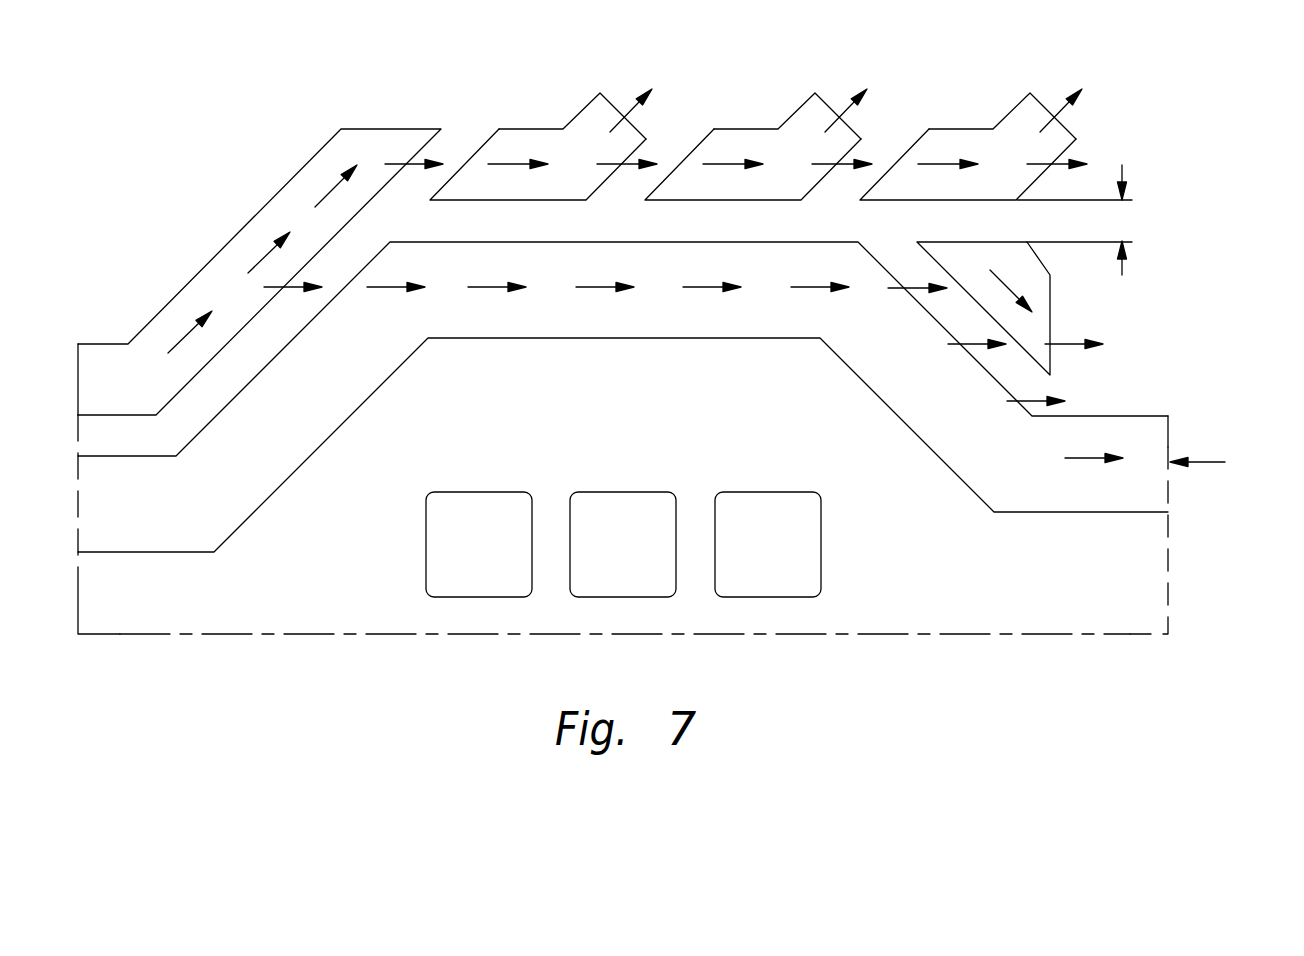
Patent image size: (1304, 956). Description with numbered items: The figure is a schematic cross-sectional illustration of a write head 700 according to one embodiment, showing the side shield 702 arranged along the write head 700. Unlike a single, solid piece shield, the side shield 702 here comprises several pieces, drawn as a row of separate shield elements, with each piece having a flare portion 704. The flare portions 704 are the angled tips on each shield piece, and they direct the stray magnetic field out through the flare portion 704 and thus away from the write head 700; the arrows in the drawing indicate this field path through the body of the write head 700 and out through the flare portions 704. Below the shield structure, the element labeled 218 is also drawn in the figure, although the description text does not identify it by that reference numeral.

The write head 700 is at (127, 125).
The side shield 702 is at (600, 82).
The flare portion 704 is at (592, 102).
The write coil 218 is at (620, 500).